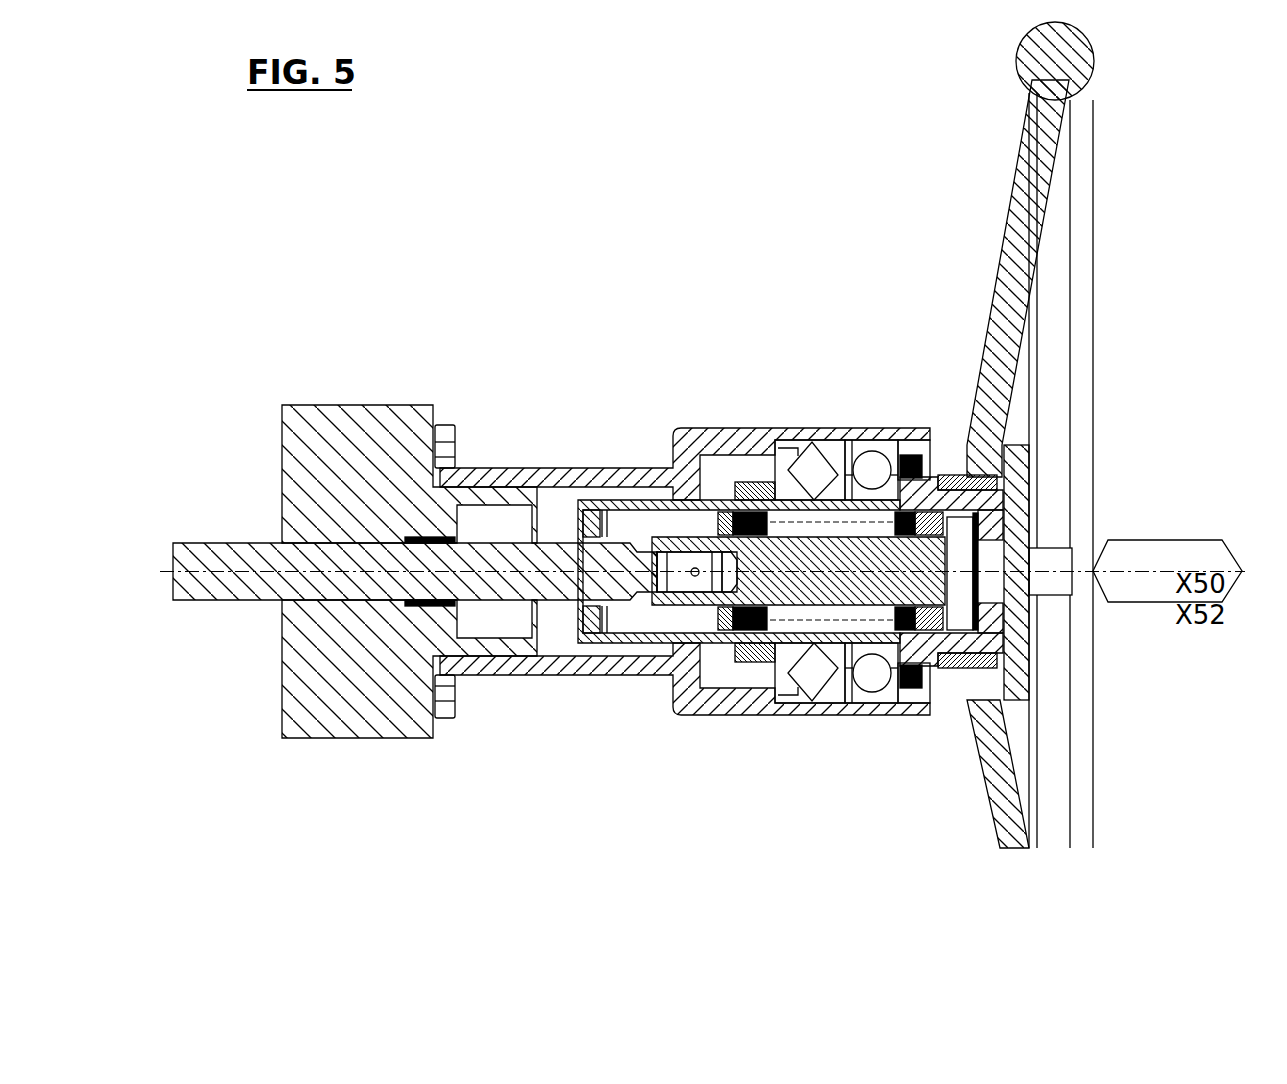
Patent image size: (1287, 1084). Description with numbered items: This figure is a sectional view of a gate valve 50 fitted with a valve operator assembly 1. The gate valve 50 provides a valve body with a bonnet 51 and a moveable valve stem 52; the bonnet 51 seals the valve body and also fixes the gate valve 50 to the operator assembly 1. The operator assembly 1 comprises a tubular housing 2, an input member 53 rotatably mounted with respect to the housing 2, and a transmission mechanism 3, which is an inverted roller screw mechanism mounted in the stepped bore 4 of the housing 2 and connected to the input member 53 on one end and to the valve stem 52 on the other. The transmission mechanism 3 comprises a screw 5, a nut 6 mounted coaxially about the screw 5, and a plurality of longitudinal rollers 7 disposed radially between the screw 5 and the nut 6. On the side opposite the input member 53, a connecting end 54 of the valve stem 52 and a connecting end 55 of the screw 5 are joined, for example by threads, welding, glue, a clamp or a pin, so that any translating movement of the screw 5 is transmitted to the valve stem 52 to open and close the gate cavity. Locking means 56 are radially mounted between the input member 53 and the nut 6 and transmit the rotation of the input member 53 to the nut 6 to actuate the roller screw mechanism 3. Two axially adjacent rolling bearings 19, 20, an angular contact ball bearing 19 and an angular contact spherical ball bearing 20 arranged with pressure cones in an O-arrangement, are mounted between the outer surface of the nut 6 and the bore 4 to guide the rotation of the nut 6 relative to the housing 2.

The operator assembly 1 is at (542, 442).
The housing 2 is at (680, 430).
The transmission mechanism 3 is at (760, 662).
The bore 4 is at (745, 470).
The screw 5 is at (862, 540).
The nut 6 is at (888, 685).
The rollers 7 is at (803, 515).
The angular contact ball bearing 19 is at (803, 678).
The angular contact spherical ball bearing 20 is at (853, 717).
The gate valve 50 is at (1132, 265).
The bonnet 51 is at (322, 405).
The valve stem 52 is at (203, 543).
The input member 53 is at (981, 352).
The connecting end of valve stem 54 is at (667, 555).
The connecting end of screw 55 is at (693, 607).
The locking means 56 is at (975, 675).